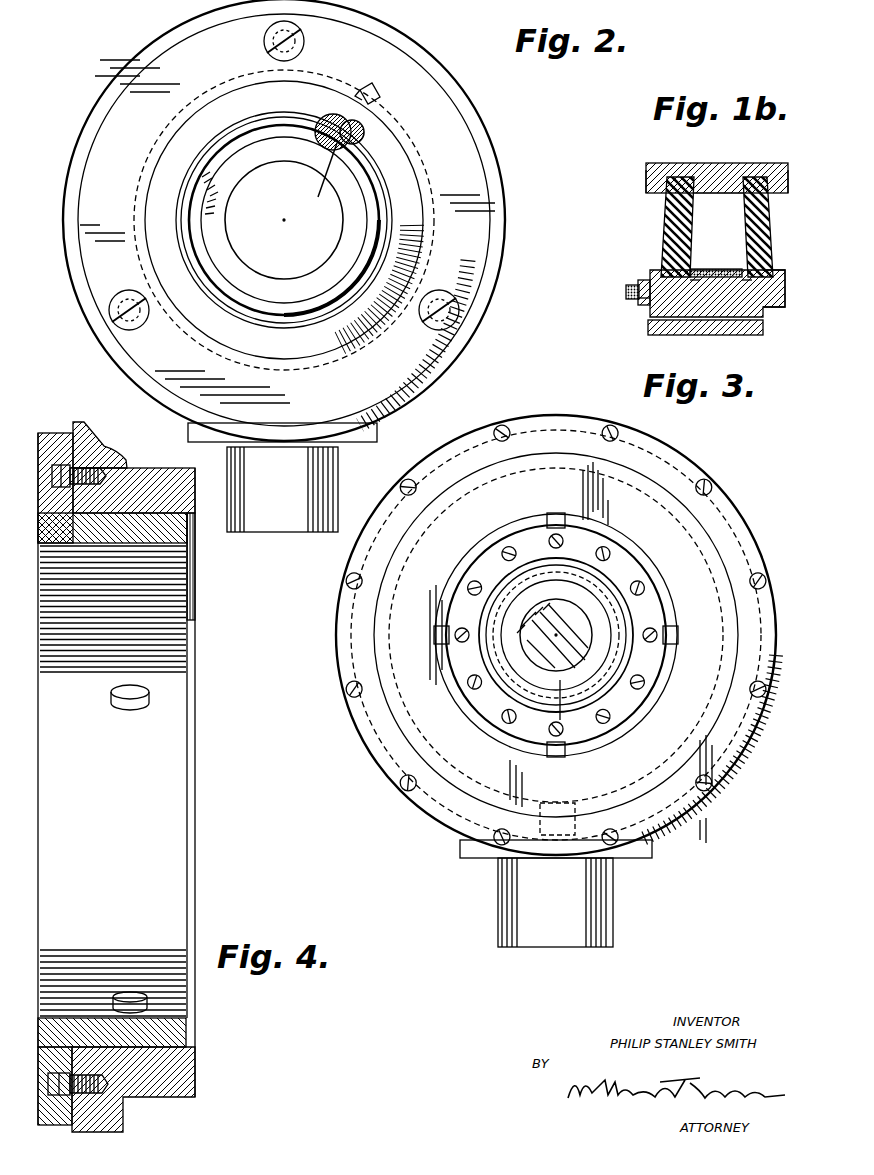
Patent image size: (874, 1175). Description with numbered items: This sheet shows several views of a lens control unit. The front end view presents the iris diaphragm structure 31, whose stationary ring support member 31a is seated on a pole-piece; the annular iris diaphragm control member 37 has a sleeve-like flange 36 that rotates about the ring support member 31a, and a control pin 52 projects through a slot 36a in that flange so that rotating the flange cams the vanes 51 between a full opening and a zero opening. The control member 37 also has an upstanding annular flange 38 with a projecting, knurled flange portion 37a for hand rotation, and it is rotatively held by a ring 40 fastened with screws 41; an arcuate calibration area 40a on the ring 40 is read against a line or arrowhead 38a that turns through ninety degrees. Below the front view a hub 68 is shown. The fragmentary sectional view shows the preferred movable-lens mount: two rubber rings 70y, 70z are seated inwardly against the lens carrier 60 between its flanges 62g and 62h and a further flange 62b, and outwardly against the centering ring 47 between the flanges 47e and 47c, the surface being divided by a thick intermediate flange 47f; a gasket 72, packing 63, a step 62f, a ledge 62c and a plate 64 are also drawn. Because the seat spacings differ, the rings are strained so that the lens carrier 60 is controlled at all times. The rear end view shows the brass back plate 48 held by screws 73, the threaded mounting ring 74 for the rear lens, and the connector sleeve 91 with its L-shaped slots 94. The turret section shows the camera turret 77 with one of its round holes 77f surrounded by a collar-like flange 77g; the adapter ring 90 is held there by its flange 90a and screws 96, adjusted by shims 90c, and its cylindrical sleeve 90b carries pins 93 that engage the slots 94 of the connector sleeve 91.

In FIG. 2, the ring 40 is at (135, 108).
In FIG. 4, the ring 40 is at (134, 462).
In FIG. 2, the screws 41 is at (305, 48).
In FIG. 2, the iris diaphragm control member 37 is at (168, 165).
In FIG. 2, the arcuate calibration area 40a is at (402, 118).
In FIG. 2, the line or arrowhead 38a is at (370, 96).
In FIG. 2, the annular flange 38 is at (403, 168).
In FIG. 2, the projecting flange portion 37a is at (387, 197).
In FIG. 2, the iris diaphragm structure 31 is at (222, 282).
In FIG. 2, the ring support member 31a is at (253, 300).
In FIG. 2, the slot 36a is at (318, 180).
In FIG. 2, the sleeve-like flange 36 is at (327, 117).
In FIG. 2, the control pin 52 is at (360, 127).
In FIG. 2, the vanes 51 is at (335, 170).
In FIG. 2, the hub 68 is at (313, 480).
In FIG. 3, the hub 68 is at (518, 900).
In FIG. 1B, the centering ring 47 is at (722, 168).
In FIG. 1B, the flange 47e is at (648, 172).
In FIG. 1B, the flange 47c is at (792, 180).
In FIG. 1B, the rubber ring 70y is at (663, 212).
In FIG. 1B, the rubber ring 70z is at (765, 236).
In FIG. 1B, the intermediate flange 47f is at (715, 194).
In FIG. 1B, the gasket 72 is at (722, 268).
In FIG. 1B, the lens carrier 60 is at (725, 306).
In FIG. 1B, the step 62f is at (645, 280).
In FIG. 1B, the flange 62b is at (805, 263).
In FIG. 1B, the packing 63 is at (630, 285).
In FIG. 1B, the ledge 62c is at (635, 300).
In FIG. 1B, the plate 64 is at (763, 313).
In FIG. 1B, the flange 62g is at (697, 282).
In FIG. 1B, the flange 62h is at (744, 310).
In FIG. 3, the back plate 48 is at (344, 643).
In FIG. 3, the screws 73 is at (715, 487).
In FIG. 3, the connector sleeve 91 is at (643, 725).
In FIG. 3, the L-shaped slots 94 is at (672, 640).
In FIG. 3, the mounting ring 74 is at (598, 628).
In FIG. 4, the adapter ring 90 is at (33, 543).
In FIG. 4, the flange 90a is at (65, 440).
In FIG. 4, the shims 90c is at (105, 442).
In FIG. 4, the cylindrical sleeve 90b is at (160, 543).
In FIG. 4, the screws 96 is at (55, 462).
In FIG. 4, the pins 93 is at (120, 710).
In FIG. 4, the round holes 77f is at (170, 1040).
In FIG. 4, the annular collar-like flange 77g is at (180, 1080).
In FIG. 4, the turret 77 is at (197, 1094).